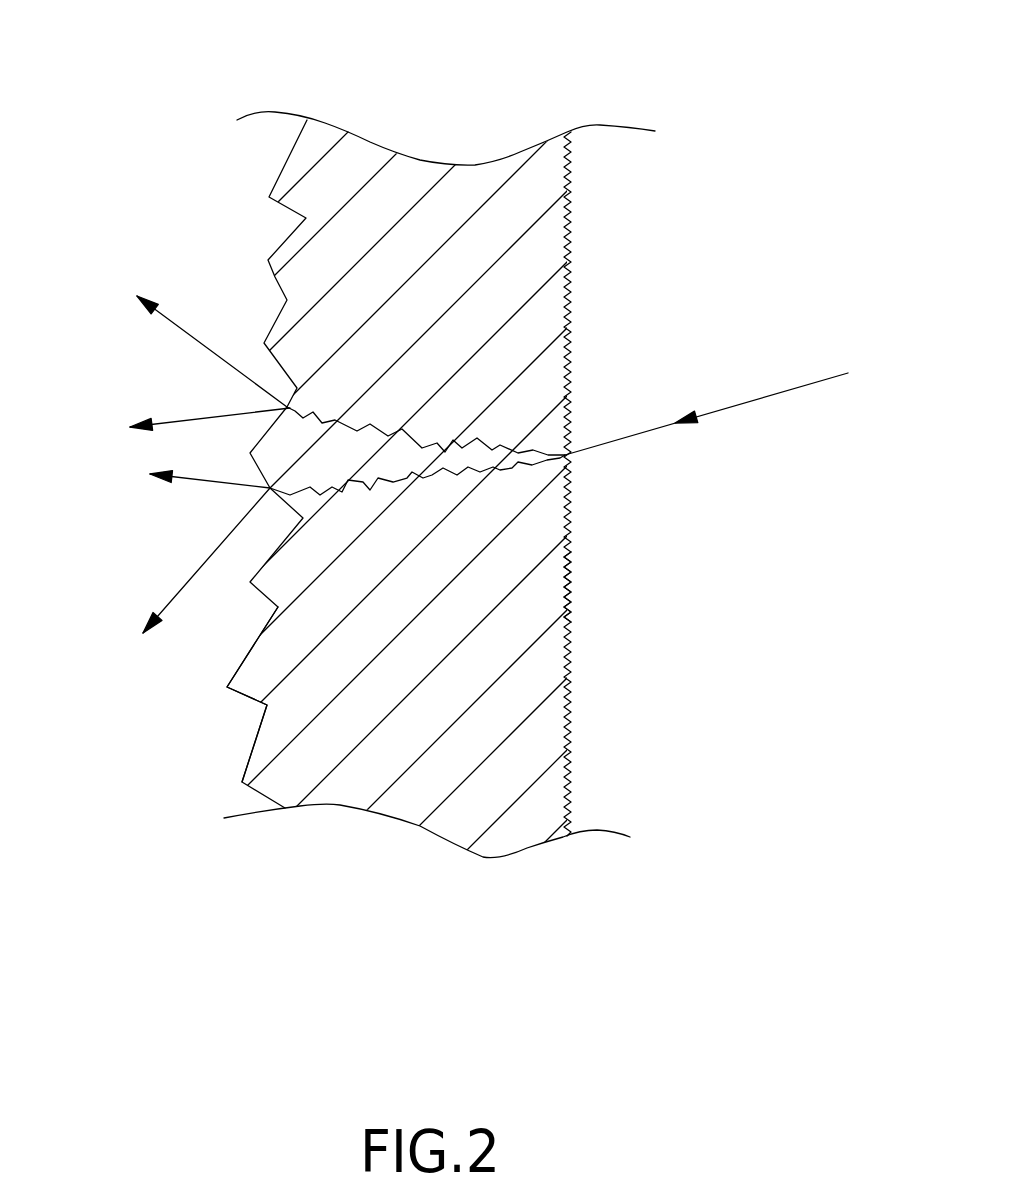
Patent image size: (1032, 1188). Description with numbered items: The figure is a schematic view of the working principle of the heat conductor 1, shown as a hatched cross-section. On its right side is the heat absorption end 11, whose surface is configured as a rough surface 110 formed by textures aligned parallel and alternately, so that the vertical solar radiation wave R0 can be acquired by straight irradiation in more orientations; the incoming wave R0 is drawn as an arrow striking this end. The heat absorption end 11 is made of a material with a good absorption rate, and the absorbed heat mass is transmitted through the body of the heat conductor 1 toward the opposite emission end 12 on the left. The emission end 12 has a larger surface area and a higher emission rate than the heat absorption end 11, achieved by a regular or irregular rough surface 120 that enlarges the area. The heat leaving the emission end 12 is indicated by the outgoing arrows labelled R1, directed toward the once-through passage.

The heat conductor 1 is at (402, 197).
The heat absorption end 11 is at (586, 311).
The rough surface 110 is at (571, 590).
The emission end 12 is at (263, 241).
The rough surface 120 is at (245, 660).
The reflected light rays R1 is at (187, 447).
The solar radiation wave R0 is at (727, 403).